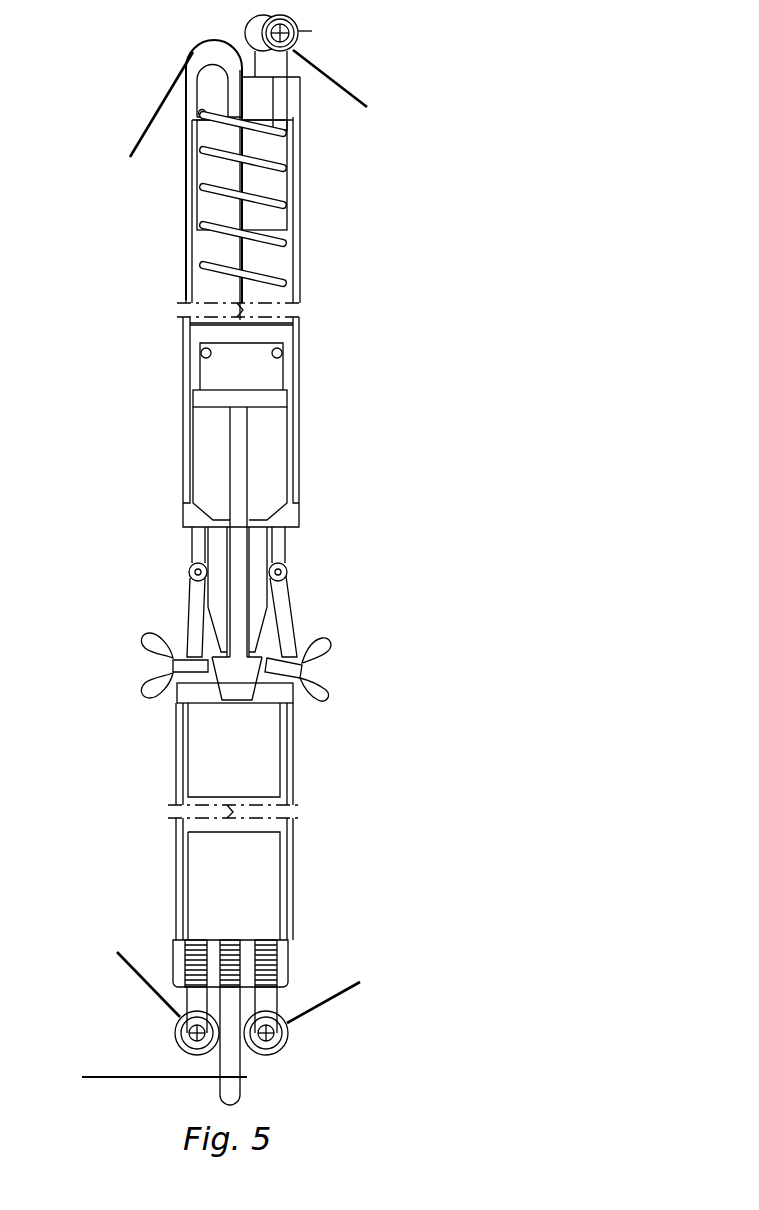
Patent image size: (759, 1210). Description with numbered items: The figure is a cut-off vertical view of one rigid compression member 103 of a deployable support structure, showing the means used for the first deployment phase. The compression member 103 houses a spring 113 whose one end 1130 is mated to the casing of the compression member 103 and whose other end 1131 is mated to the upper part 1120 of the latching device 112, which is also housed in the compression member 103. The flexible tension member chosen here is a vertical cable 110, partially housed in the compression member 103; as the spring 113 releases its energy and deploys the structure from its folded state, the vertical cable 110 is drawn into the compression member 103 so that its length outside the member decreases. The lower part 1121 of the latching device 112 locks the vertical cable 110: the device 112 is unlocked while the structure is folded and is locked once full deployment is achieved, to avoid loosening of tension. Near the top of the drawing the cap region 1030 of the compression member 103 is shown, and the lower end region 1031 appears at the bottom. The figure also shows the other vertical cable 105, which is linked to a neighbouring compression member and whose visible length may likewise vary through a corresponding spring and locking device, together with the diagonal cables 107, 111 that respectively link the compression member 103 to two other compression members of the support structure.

The compression member 103 is at (330, 452).
The vertical cable 105 is at (328, 1007).
The diagonal cable 107 is at (345, 72).
The vertical cable 110 is at (140, 128).
The diagonal cable 111 is at (130, 975).
The latching device 112 is at (300, 610).
The spring 113 is at (215, 240).
The upper cap 1030 is at (203, 83).
The lower end block 1031 is at (292, 963).
The upper part of the locking device 1120 is at (307, 340).
The lower part of the locking device 1121 is at (300, 683).
The end of the spring 1130 is at (303, 118).
The end of the spring 1131 is at (303, 325).